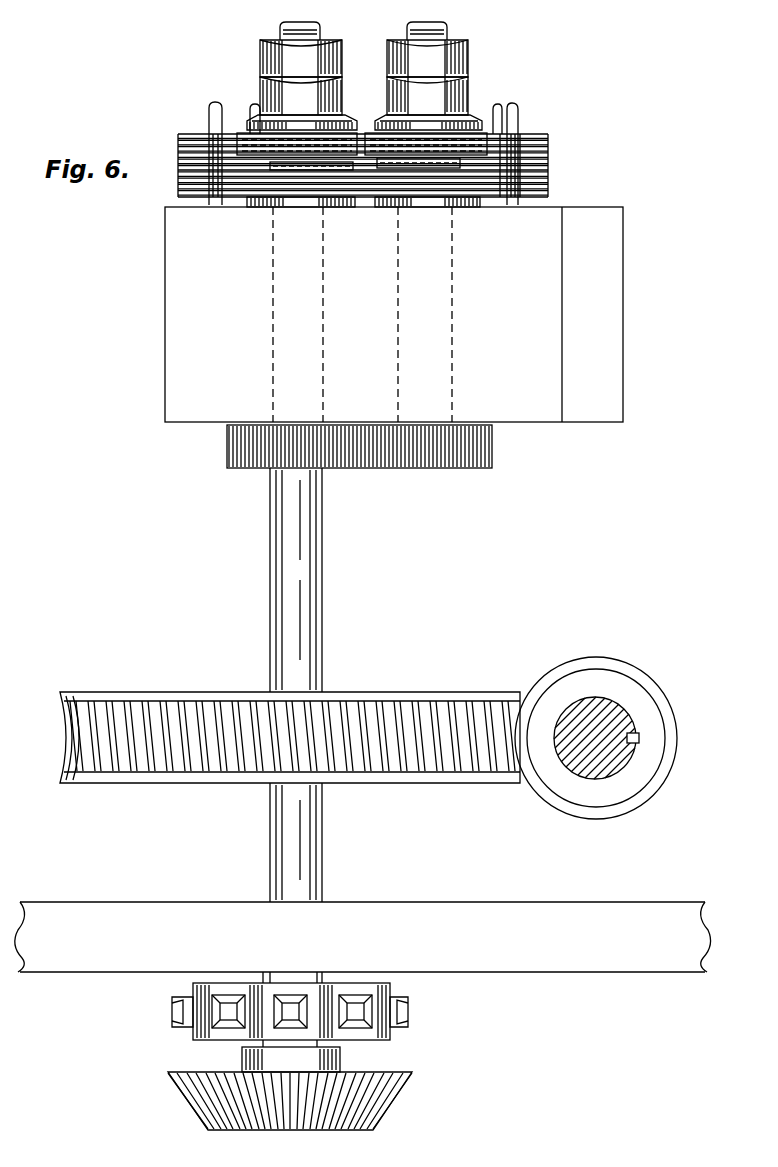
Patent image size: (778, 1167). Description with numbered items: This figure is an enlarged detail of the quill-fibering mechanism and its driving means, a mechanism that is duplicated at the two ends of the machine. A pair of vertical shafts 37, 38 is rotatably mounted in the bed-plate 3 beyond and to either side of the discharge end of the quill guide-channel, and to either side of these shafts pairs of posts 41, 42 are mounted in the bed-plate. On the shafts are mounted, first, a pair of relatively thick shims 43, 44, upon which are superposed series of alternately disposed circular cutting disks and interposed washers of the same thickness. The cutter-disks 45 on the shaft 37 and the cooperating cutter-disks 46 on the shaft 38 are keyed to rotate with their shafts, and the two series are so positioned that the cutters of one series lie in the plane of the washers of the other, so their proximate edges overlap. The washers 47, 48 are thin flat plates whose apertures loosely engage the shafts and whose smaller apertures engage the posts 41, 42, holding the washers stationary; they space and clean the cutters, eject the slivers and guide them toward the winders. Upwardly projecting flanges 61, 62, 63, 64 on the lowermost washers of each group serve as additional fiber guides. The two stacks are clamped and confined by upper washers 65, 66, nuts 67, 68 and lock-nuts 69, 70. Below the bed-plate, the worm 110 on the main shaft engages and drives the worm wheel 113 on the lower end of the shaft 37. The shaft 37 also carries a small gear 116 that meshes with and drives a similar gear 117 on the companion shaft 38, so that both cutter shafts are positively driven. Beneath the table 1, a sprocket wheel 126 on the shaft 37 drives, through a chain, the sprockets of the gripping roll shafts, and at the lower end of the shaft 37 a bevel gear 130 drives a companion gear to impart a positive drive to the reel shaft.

The table 1 is at (363, 937).
The bed-plate 3 is at (394, 314).
The vertical shaft 37 is at (280, 30).
The vertical shaft 38 is at (447, 30).
The posts 41 is at (209, 110).
The posts 42 is at (518, 117).
The shim 43 is at (262, 205).
The shim 44 is at (470, 205).
The cutter-disks 45 is at (250, 128).
The cutter-disks 46 is at (495, 128).
The washers 47 is at (178, 188).
The washers 48 is at (548, 190).
The upwardly projecting flange 61 is at (317, 175).
The upwardly projecting flange 62 is at (440, 175).
The upwardly projecting flange 63 is at (257, 152).
The upwardly projecting flange 64 is at (460, 148).
The upper washer 65 is at (340, 121).
The upper washer 66 is at (457, 117).
The nut 67 is at (330, 99).
The nut 68 is at (395, 88).
The lock-nut 69 is at (327, 62).
The lock-nut 70 is at (395, 60).
The worm 110 is at (665, 726).
The worm wheel 113 is at (478, 695).
The small gear 116 is at (235, 448).
The gear 117 is at (485, 452).
The sprocket wheel 126 is at (408, 1012).
The bevel gear 130 is at (400, 1080).